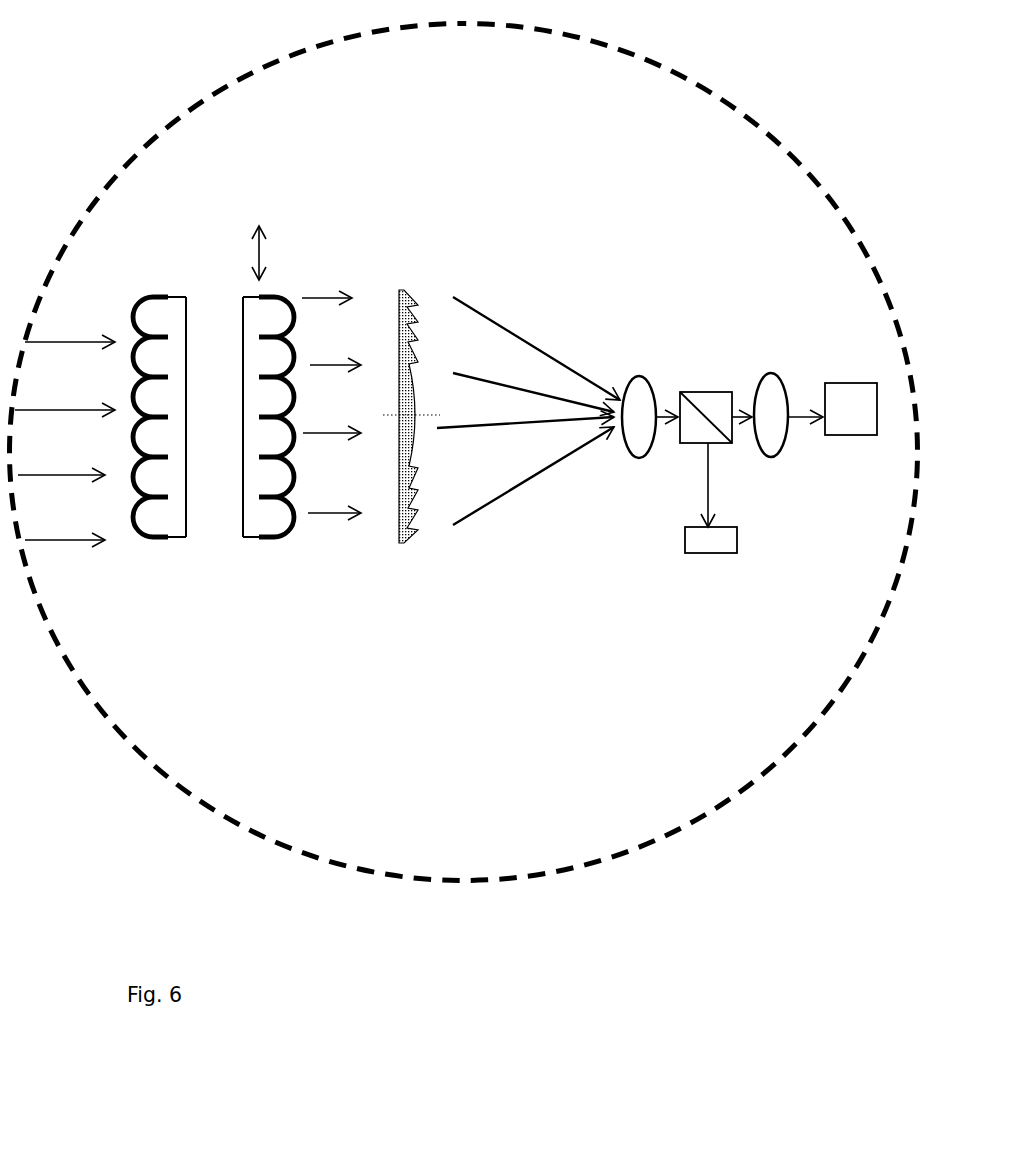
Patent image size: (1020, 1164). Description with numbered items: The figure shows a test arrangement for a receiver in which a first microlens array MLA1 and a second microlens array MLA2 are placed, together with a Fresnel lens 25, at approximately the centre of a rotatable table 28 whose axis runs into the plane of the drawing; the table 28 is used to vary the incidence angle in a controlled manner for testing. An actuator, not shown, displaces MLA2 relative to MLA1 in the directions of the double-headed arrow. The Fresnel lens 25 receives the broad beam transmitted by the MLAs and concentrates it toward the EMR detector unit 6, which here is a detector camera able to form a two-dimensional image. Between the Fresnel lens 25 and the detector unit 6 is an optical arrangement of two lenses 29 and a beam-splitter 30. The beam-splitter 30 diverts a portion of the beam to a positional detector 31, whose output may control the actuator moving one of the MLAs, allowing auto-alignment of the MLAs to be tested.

The rotatable table 28 is at (643, 852).
The second microlens array MLA2 is at (162, 538).
The first microlens array MLA1 is at (255, 538).
The Fresnel lens 25 is at (403, 540).
The lenses 29 is at (632, 378).
The beam-splitter 30 is at (710, 390).
The EMR detector unit 6 is at (832, 435).
The positional detector 31 is at (705, 553).